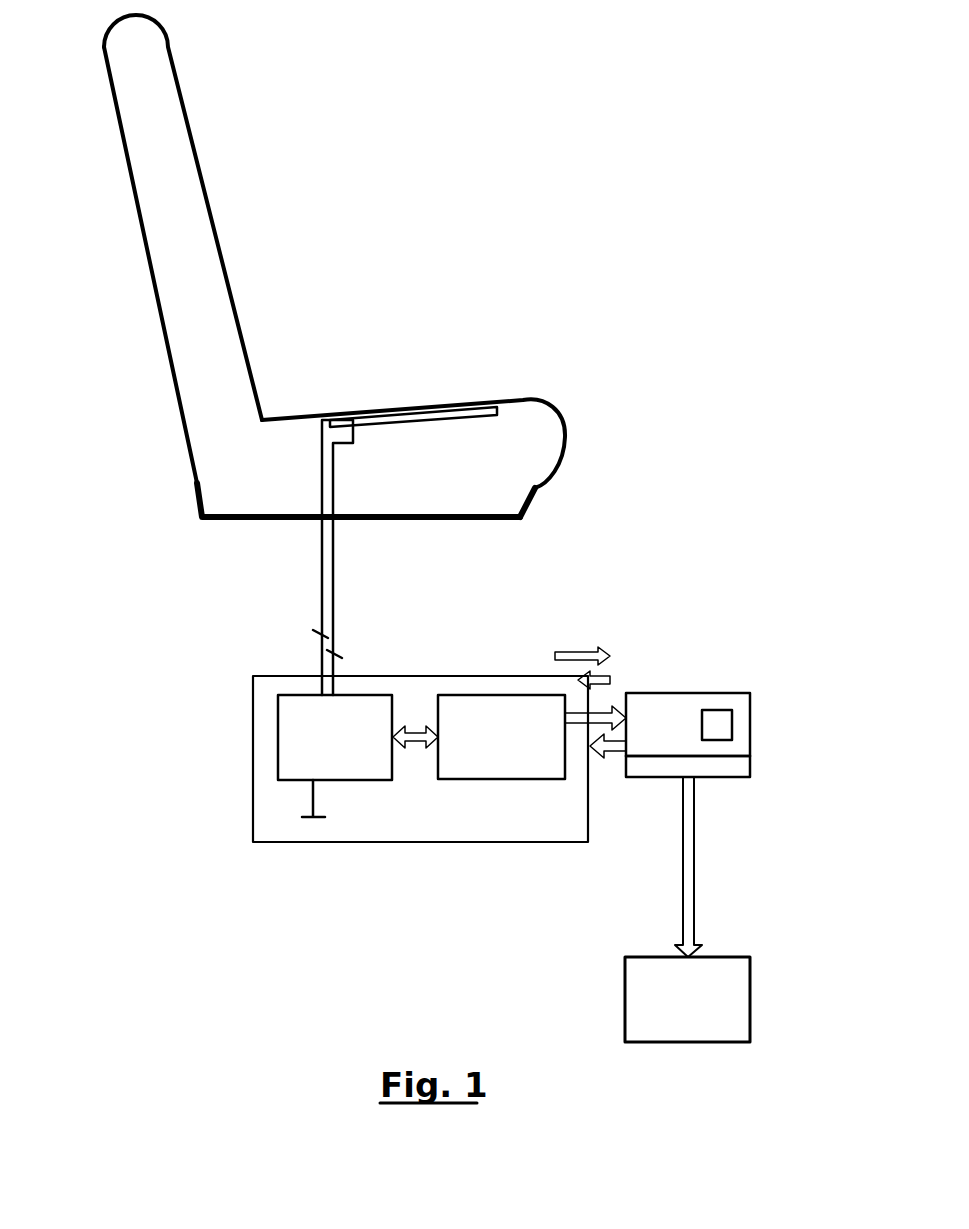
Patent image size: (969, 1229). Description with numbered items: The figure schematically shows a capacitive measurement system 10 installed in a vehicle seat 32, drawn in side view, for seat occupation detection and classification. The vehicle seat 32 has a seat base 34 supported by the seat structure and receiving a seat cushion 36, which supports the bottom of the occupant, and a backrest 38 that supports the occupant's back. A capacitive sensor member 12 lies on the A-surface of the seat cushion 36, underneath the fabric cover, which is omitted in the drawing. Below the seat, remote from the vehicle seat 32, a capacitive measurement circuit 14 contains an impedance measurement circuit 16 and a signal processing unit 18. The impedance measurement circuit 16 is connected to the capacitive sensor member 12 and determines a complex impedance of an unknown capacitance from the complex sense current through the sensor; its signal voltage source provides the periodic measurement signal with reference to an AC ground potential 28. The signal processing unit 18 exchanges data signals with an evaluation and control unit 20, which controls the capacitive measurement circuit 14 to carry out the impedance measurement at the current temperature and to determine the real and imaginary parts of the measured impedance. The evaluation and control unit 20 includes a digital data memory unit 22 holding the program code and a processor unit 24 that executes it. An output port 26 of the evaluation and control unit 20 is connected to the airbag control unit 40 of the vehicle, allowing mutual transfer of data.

The capacitive measurement system 10 is at (723, 468).
The capacitive sensor member 12 is at (422, 425).
The capacitive measurement circuit 14 is at (253, 715).
The impedance measurement circuit 16 is at (315, 751).
The signal processing unit 18 is at (484, 751).
The evaluation and control unit 20 is at (675, 693).
The digital data memory unit 22 is at (698, 765).
The processor unit 24 is at (722, 718).
The output port 26 is at (687, 780).
The AC ground potential 28 is at (305, 818).
The vehicle seat 32 is at (288, 253).
The seat base 34 is at (455, 520).
The seat cushion 36 is at (548, 425).
The backrest 38 is at (132, 177).
The airbag control unit 40 is at (671, 1014).